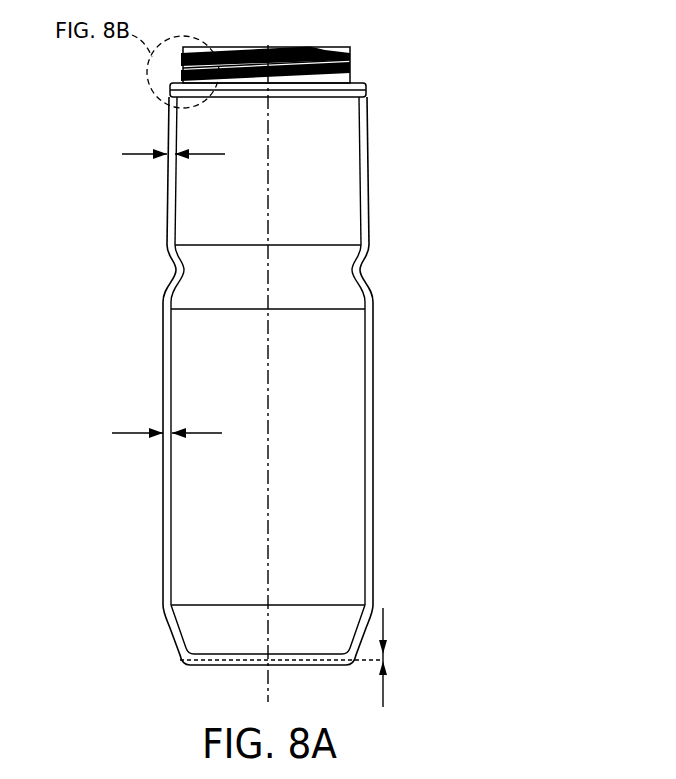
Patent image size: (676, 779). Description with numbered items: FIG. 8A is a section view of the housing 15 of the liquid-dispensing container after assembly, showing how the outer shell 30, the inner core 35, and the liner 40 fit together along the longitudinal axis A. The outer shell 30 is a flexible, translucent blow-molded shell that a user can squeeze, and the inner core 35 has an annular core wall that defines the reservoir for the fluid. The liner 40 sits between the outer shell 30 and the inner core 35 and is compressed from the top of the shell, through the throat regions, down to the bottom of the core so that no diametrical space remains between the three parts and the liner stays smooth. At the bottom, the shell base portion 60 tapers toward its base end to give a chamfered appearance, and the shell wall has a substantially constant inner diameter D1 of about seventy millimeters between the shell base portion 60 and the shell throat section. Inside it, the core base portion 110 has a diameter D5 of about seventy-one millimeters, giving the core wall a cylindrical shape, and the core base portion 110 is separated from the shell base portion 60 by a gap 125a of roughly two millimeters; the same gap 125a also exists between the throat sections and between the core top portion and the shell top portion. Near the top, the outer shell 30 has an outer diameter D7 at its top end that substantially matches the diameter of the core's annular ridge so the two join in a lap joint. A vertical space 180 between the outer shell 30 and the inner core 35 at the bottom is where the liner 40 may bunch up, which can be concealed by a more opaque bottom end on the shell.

The housing 15 is at (382, 42).
The outer shell 30 is at (372, 163).
The liner 40 is at (370, 370).
The inner core 35 is at (368, 452).
The core base portion 110 is at (168, 550).
The shell base portion 60 is at (162, 588).
The vertical space 180 is at (385, 618).
The gap 125a is at (137, 157).
The outer width or diameter of the outer shell D7 is at (415, 100).
The width or diameter of the core base portion D5 is at (171, 352).
The inner width or diameter of the shell wall D1 is at (163, 393).
The longitudinal axis A is at (267, 683).